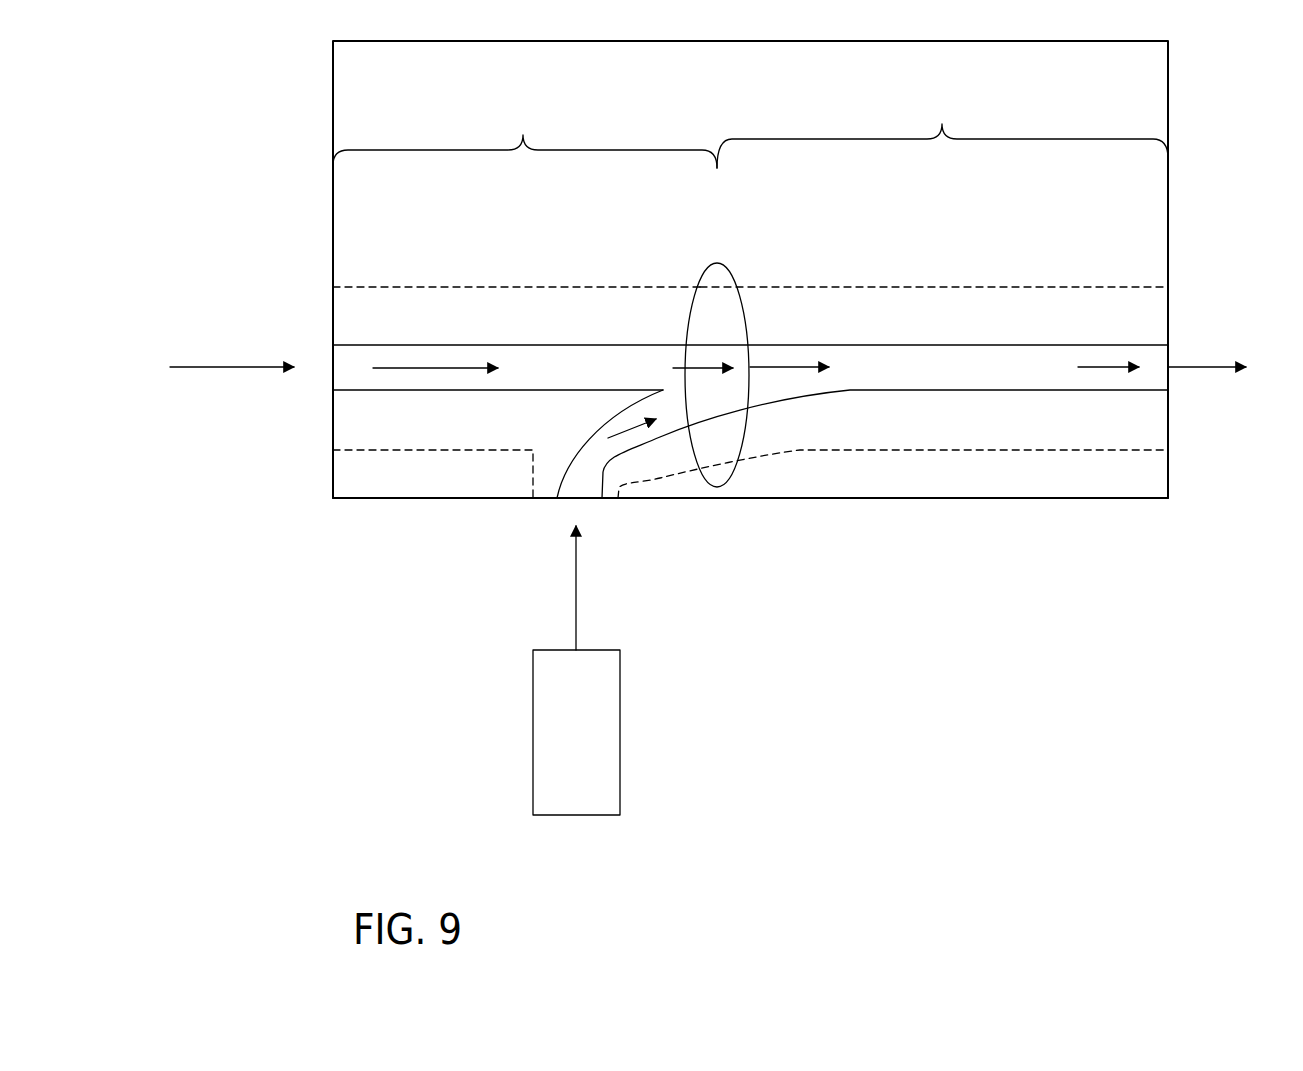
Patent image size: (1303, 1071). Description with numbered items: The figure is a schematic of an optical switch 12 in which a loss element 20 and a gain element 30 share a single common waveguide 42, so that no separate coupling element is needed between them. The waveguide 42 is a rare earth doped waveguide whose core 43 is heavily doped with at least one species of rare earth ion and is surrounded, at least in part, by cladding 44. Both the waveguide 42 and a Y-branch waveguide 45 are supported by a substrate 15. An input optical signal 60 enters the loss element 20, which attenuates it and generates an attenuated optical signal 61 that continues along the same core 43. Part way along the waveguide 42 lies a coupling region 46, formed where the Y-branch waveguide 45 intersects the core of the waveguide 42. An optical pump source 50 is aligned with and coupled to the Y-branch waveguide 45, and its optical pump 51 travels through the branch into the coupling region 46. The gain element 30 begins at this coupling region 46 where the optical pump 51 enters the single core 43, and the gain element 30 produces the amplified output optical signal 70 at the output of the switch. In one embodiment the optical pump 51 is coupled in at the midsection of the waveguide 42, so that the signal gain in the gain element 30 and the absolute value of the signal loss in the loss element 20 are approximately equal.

The optical switch 12 is at (731, 832).
The supporting substrate 15 is at (1145, 483).
The loss element 20 is at (525, 123).
The gain element 30 is at (942, 127).
The waveguide 42 is at (432, 253).
The core 43 is at (547, 357).
The cladding 44 is at (899, 310).
The Y-branch waveguide 45 is at (640, 490).
The coupling region 46 is at (732, 428).
The optical pump source 50 is at (533, 757).
The optical pump 51 is at (575, 605).
The input optical signal 60 is at (225, 370).
The attenuated optical signal 61 is at (695, 364).
The amplified output optical signal 70 is at (1192, 365).